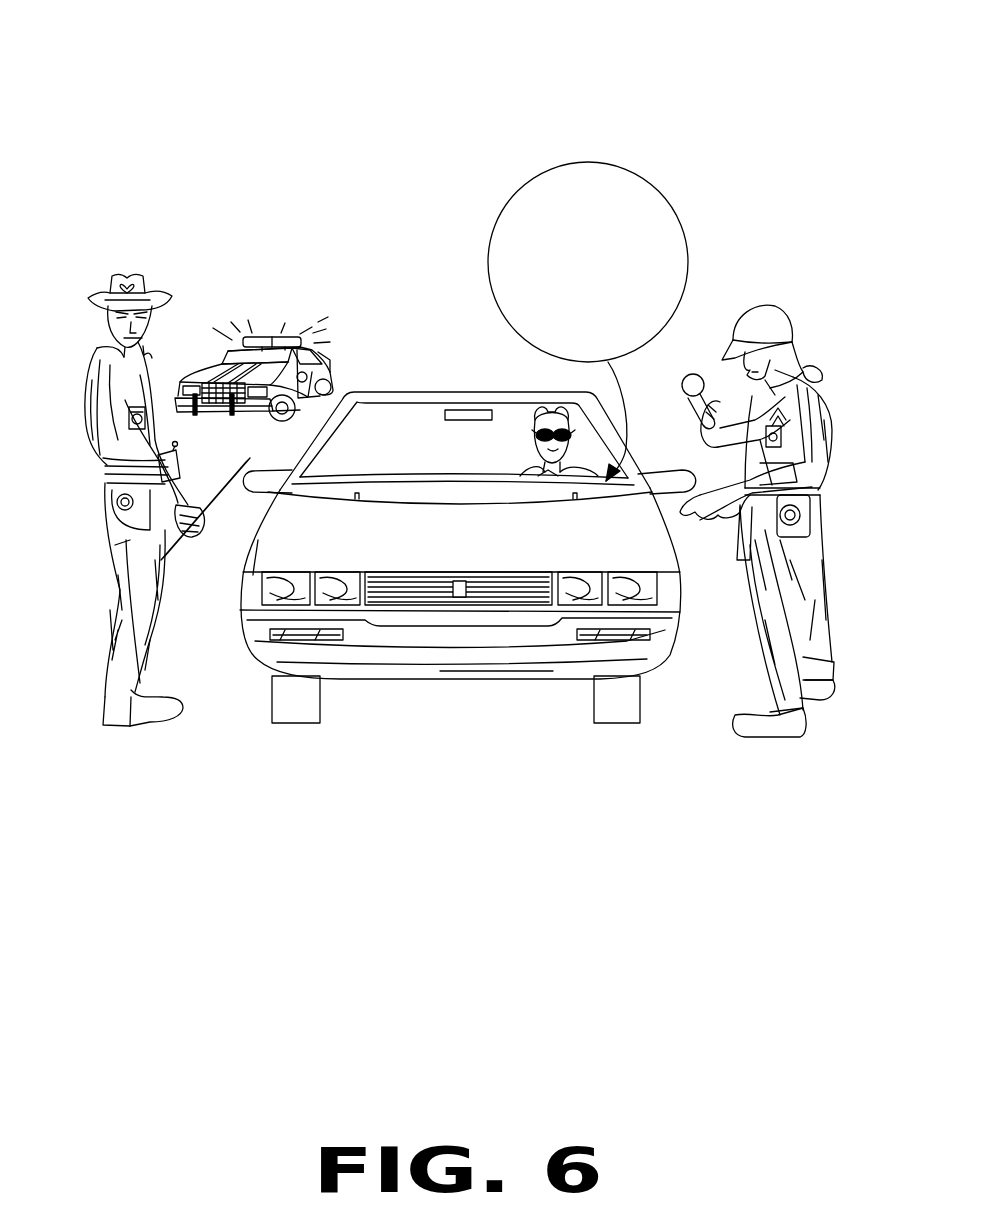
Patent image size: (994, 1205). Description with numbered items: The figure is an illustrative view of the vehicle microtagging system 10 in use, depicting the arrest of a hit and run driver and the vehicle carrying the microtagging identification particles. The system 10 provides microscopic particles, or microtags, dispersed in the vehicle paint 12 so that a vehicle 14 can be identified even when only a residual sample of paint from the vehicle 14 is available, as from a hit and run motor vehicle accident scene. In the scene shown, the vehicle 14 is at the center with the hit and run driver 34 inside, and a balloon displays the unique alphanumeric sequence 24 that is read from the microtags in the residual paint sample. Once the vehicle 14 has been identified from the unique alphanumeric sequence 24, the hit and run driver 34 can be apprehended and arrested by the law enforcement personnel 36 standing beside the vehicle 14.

The vehicle microtagging system 10 is at (798, 117).
The vehicle paint 12 is at (637, 549).
The vehicle 14 is at (393, 390).
The unique alphanumeric sequence 24 is at (598, 250).
The hit and run driver 34 is at (527, 418).
The law enforcement personnel 36 is at (757, 310).